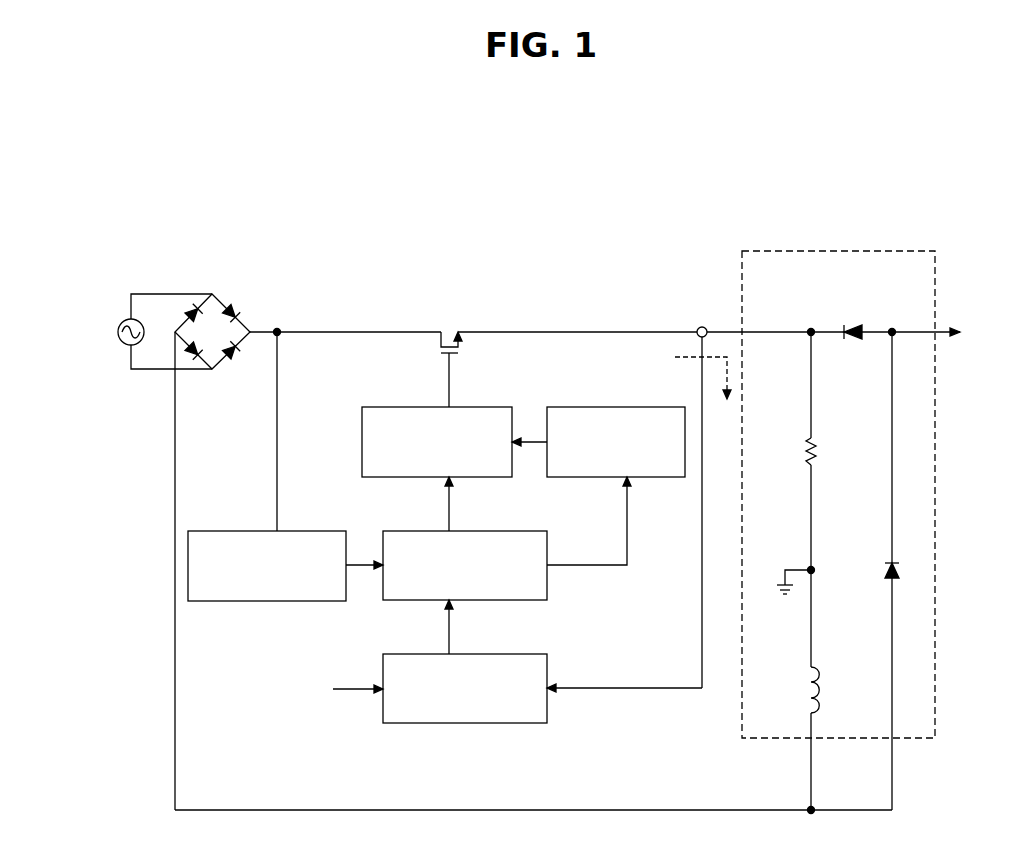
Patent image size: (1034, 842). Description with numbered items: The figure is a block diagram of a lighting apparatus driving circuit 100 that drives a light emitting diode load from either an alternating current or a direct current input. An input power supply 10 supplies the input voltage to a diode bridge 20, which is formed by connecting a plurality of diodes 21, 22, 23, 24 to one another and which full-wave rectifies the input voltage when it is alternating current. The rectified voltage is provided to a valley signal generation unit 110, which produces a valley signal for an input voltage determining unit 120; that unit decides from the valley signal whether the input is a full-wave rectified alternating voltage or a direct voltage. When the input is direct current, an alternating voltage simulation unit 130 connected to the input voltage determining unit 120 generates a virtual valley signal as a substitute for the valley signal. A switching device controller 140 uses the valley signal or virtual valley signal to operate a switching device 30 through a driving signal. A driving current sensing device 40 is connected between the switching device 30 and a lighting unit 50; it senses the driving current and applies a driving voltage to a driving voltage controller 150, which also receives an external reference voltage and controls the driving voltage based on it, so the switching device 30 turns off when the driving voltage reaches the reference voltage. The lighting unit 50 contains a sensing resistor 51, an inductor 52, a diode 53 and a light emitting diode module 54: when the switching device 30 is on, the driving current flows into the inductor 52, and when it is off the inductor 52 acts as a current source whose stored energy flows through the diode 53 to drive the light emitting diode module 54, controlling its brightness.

The lighting apparatus driving circuit 100 is at (548, 153).
The input power supply 10 is at (114, 341).
The diode bridge 20 is at (259, 241).
The diode 21 is at (193, 302).
The diode 22 is at (237, 308).
The diode 23 is at (196, 362).
The diode 24 is at (238, 360).
The switching device 30 is at (448, 298).
The driving current sensing device 40 is at (702, 325).
The lighting unit 50 is at (832, 250).
The sensing resistor 51 is at (802, 451).
The inductor 52 is at (800, 691).
The diode 53 is at (885, 571).
The LED module 54 is at (851, 321).
The valley signal generation unit 110 is at (277, 601).
The input voltage determining unit 120 is at (411, 530).
The AC voltage simulation unit 130 is at (623, 406).
The switching device controller 140 is at (418, 406).
The driving voltage controller 150 is at (449, 724).